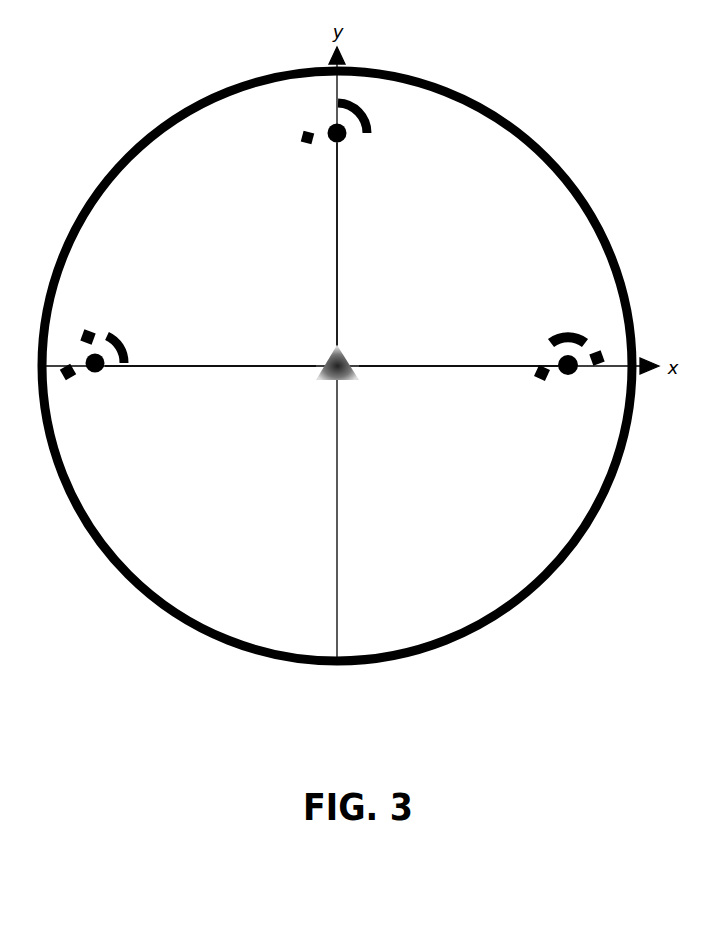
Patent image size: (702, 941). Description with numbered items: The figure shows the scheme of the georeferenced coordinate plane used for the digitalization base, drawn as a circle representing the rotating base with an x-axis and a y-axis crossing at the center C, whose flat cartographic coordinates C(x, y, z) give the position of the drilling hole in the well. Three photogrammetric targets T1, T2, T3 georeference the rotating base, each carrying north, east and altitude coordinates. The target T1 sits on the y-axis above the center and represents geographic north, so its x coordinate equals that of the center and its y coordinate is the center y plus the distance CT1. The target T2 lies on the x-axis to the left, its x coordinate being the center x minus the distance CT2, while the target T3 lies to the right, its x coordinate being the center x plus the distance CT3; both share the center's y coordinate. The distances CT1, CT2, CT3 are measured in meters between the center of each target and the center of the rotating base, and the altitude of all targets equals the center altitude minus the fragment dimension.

The center of the rotating base C is at (369, 387).
The photogrammetric target T1 is at (346, 135).
The photogrammetric target T2 is at (107, 365).
The photogrammetric target T3 is at (575, 369).
The distance between center of target T1 and center of rotating base CT1 is at (398, 228).
The distance between center of target T2 and center of rotating base CT2 is at (257, 373).
The distance between center of target T3 and center of rotating base CT3 is at (487, 373).